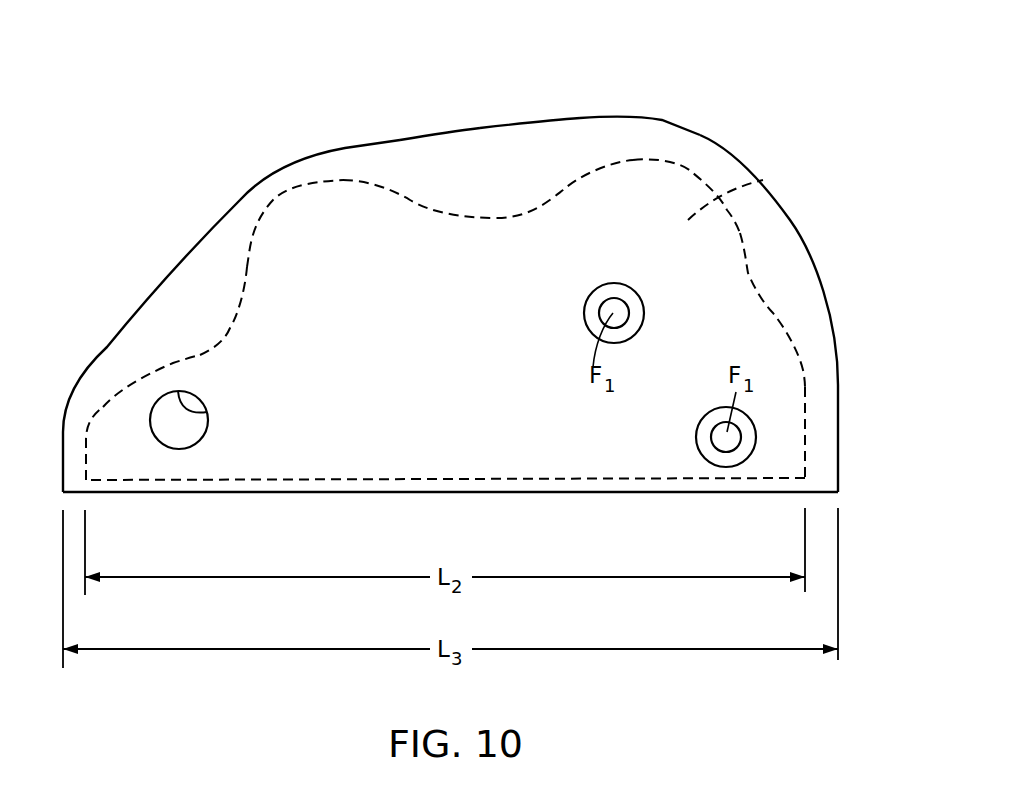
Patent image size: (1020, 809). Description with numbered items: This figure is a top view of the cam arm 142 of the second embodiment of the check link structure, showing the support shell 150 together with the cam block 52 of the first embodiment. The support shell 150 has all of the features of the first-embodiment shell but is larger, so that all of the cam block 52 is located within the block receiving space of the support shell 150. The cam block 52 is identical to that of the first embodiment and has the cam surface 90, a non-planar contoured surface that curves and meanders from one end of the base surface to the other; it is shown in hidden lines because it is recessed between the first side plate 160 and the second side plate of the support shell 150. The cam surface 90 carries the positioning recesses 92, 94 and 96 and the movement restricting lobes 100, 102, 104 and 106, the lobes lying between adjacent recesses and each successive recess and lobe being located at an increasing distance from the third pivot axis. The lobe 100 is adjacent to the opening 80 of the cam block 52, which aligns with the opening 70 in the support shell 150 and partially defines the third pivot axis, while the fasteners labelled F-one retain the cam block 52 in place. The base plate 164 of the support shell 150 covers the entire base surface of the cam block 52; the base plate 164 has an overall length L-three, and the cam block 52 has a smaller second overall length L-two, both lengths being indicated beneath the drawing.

The cam arm 142 is at (773, 106).
The support shell 150 is at (655, 119).
The first side plate 160 is at (438, 170).
The base plate 164 is at (562, 493).
The cam surface 90 is at (88, 441).
The movement restricting lobe 100 is at (105, 410).
The positioning recess 92 is at (229, 330).
The movement restricting lobe 102 is at (307, 182).
The positioning recess 94 is at (504, 217).
The movement restricting lobe 104 is at (702, 173).
The positioning recess 96 is at (746, 268).
The movement restricting lobe 106 is at (805, 390).
The cam block 52 is at (766, 180).
The opening 70 is at (231, 420).
The opening 80 is at (207, 412).